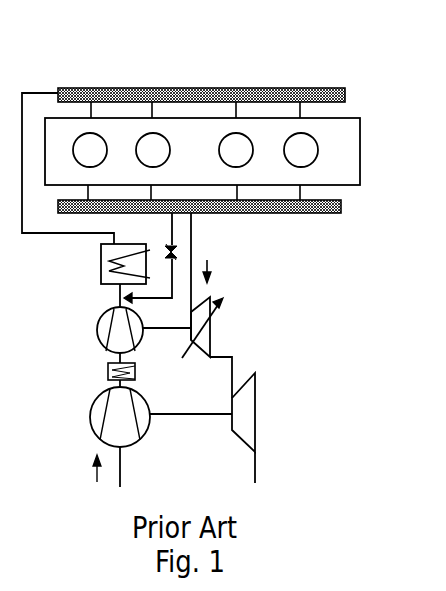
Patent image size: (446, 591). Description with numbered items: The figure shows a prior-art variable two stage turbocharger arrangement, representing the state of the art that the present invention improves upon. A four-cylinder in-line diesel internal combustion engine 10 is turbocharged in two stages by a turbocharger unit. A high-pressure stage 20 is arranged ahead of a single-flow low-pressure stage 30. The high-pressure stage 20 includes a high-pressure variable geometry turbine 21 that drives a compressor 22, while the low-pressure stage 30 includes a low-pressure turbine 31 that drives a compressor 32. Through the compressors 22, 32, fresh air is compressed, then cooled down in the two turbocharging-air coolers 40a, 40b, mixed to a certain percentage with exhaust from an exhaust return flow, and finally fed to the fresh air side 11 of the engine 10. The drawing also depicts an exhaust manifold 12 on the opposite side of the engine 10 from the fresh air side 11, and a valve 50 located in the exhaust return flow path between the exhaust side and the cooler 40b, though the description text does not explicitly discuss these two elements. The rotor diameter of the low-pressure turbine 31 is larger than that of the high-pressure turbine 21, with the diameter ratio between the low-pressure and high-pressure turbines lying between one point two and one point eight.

The internal combustion engine 10 is at (352, 68).
The fresh air side 11 is at (72, 88).
The exhaust manifold 12 is at (330, 213).
The high-pressure stage 20 is at (297, 290).
The high-pressure variable geometry turbine 21 is at (205, 337).
The compressor 22 is at (100, 325).
The low-pressure stage 30 is at (295, 365).
The low-pressure turbine 31 is at (245, 412).
The compressor 32 is at (97, 410).
The turbocharging-air cooler 40a is at (108, 372).
The turbocharging-air cooler 40b is at (101, 254).
The EGR valve 50 is at (172, 235).